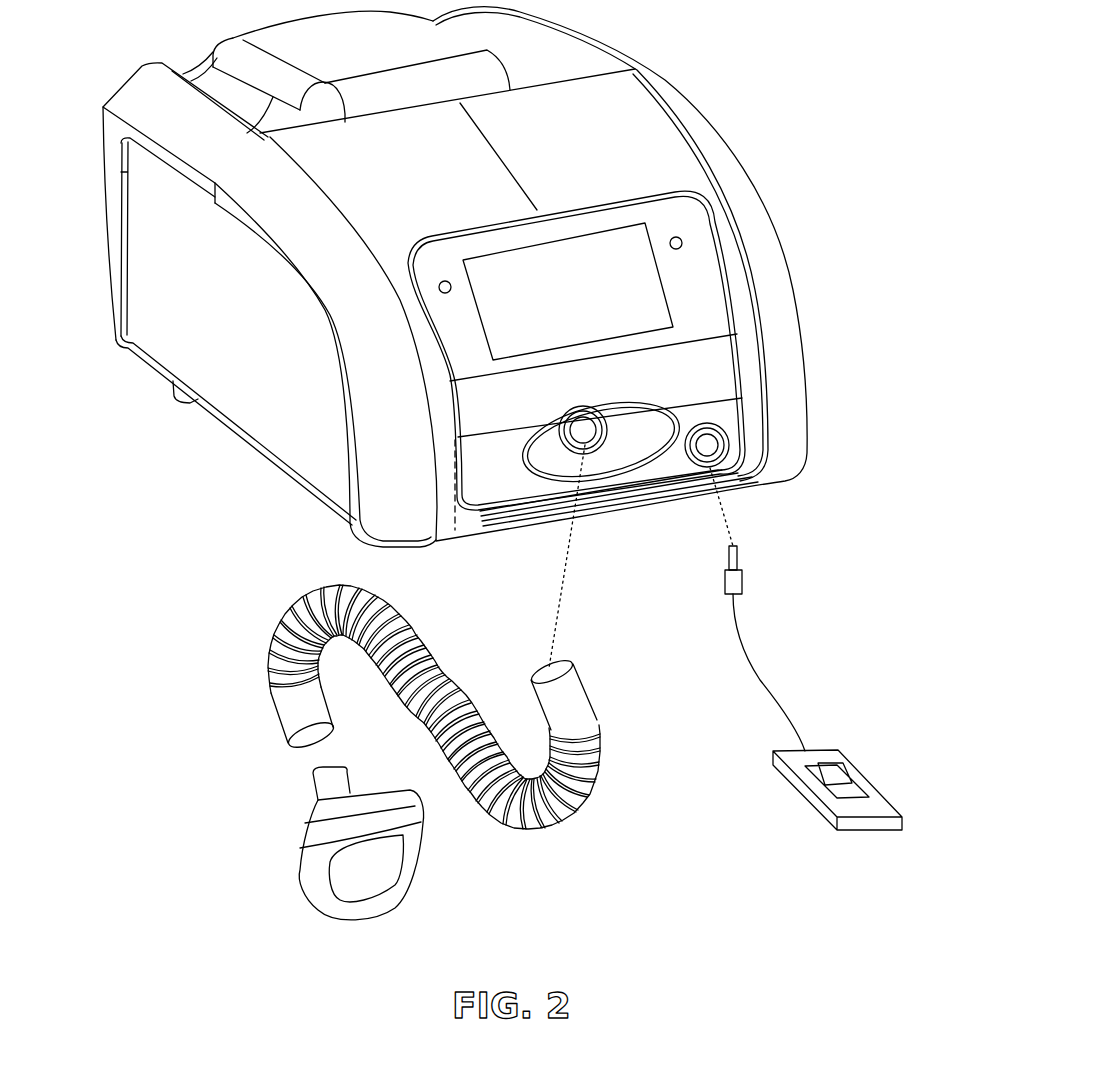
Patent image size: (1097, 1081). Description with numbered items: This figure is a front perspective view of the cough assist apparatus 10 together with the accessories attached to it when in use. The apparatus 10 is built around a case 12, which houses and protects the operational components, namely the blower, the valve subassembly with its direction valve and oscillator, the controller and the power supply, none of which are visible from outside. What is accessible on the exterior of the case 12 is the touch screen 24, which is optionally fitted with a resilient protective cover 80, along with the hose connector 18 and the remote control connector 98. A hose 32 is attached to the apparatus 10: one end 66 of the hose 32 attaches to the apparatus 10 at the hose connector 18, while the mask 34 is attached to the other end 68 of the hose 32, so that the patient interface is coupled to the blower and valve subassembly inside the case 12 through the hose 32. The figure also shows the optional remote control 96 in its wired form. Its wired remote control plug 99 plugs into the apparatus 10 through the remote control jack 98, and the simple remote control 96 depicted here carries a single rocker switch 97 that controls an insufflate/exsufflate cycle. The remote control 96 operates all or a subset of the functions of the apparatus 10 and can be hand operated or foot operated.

The cough assist apparatus 10 is at (724, 52).
The case 12 is at (713, 117).
The hose connector 18 is at (570, 413).
The touch screen 24 is at (567, 240).
The hose 32 is at (287, 617).
The mask 34 is at (390, 905).
The one end 66 is at (547, 670).
The other end 68 is at (307, 747).
The resilient protective cover 80 is at (513, 248).
The remote control 96 is at (873, 833).
The rocker switch 97 is at (846, 777).
The remote control connector 98 is at (737, 488).
The remote control plug 99 is at (724, 583).